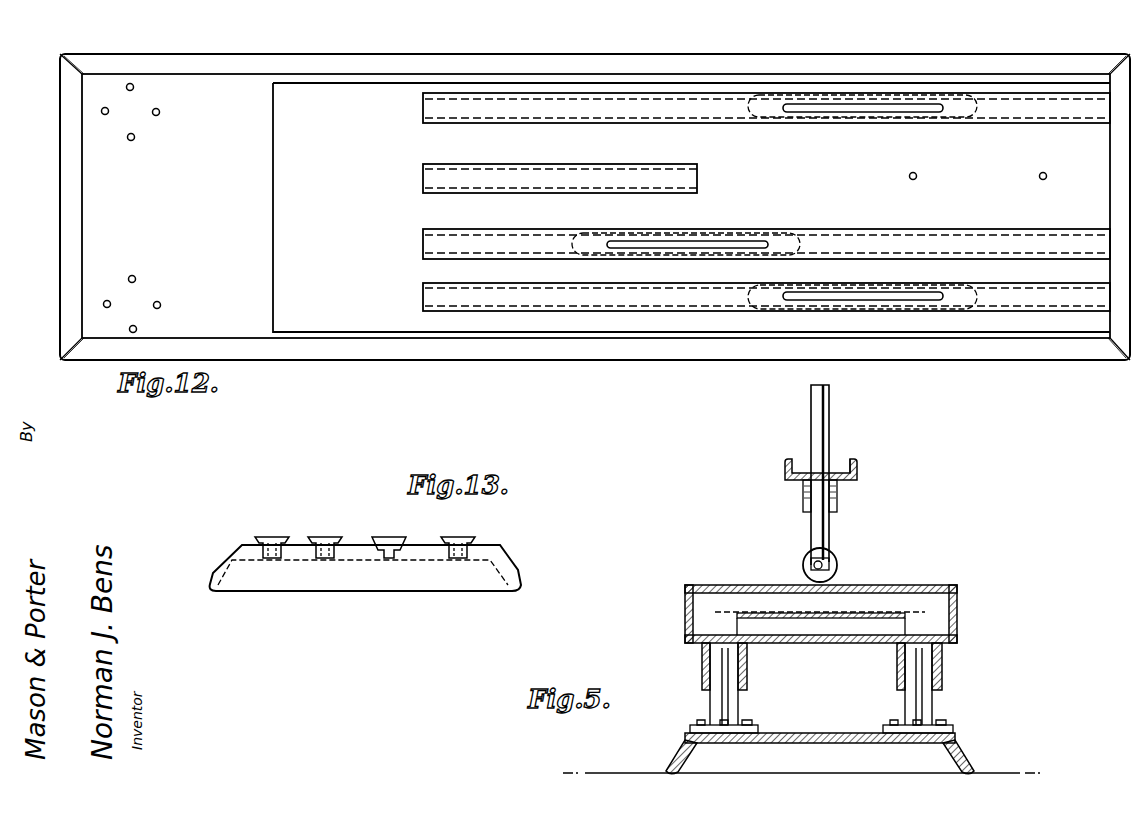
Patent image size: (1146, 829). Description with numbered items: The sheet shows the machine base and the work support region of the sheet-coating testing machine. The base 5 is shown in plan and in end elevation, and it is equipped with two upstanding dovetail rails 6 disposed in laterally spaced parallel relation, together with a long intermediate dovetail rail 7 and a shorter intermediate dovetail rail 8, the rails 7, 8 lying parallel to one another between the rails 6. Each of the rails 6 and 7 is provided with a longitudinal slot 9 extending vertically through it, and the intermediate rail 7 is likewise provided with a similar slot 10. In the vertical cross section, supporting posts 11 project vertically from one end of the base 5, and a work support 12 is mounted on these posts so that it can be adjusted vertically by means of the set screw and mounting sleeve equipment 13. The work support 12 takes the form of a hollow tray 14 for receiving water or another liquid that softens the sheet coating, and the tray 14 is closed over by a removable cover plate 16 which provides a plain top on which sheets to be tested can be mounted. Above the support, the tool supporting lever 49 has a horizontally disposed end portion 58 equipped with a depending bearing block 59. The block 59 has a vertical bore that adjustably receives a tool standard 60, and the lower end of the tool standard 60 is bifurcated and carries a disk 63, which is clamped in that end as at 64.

In FIG. 12, the base 5 is at (595, 207).
In FIG. 13, the base 5 is at (358, 578).
In FIG. 5, the base 5 is at (685, 746).
In FIG. 12, the upstanding dovetail rails 6 is at (990, 113).
In FIG. 13, the upstanding dovetail rails 6 is at (273, 537).
In FIG. 12, the long intermediate dovetail rail 7 is at (820, 232).
In FIG. 13, the long intermediate dovetail rail 7 is at (325, 537).
In FIG. 12, the shorter intermediate dovetail rail 8 is at (670, 164).
In FIG. 13, the shorter intermediate dovetail rail 8 is at (390, 537).
In FIG. 12, the longitudinal slot 9 is at (838, 110).
In FIG. 12, the slot 10 is at (757, 241).
In FIG. 5, the supporting posts 11 is at (710, 705).
In FIG. 5, the work support 12 is at (678, 625).
In FIG. 5, the set screw and mounting sleeve equipment 13 is at (702, 670).
In FIG. 5, the hollow tray 14 is at (957, 625).
In FIG. 5, the removable cover plate 16 is at (938, 585).
In FIG. 5, the tool supporting lever 49 is at (778, 470).
In FIG. 5, the horizontally disposed end portion 58 is at (838, 470).
In FIG. 5, the bearing block 59 is at (837, 505).
In FIG. 5, the tool standard 60 is at (811, 428).
In FIG. 5, the disk 63 is at (838, 572).
In FIG. 5, the clamp 64 is at (826, 558).